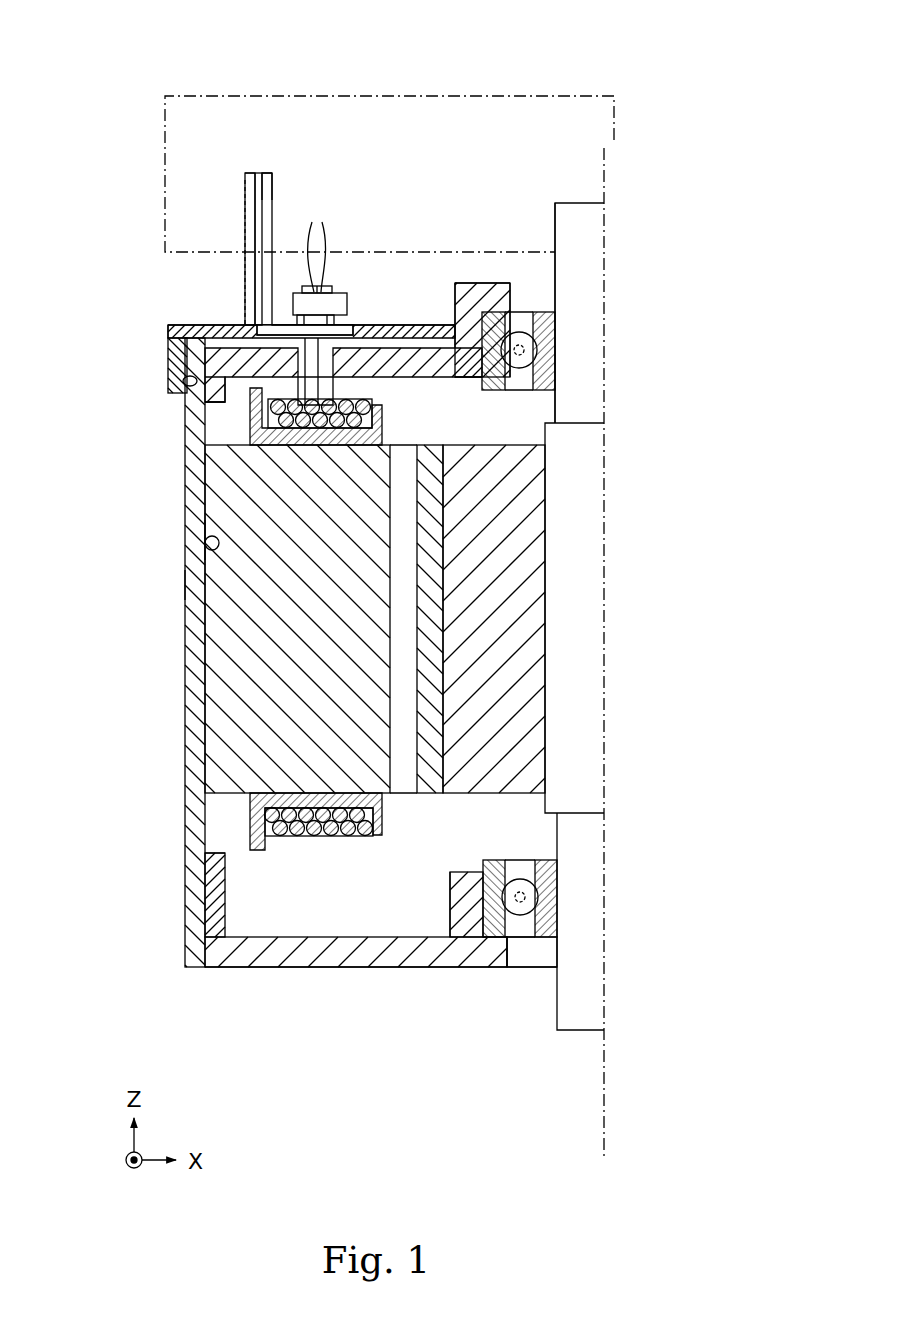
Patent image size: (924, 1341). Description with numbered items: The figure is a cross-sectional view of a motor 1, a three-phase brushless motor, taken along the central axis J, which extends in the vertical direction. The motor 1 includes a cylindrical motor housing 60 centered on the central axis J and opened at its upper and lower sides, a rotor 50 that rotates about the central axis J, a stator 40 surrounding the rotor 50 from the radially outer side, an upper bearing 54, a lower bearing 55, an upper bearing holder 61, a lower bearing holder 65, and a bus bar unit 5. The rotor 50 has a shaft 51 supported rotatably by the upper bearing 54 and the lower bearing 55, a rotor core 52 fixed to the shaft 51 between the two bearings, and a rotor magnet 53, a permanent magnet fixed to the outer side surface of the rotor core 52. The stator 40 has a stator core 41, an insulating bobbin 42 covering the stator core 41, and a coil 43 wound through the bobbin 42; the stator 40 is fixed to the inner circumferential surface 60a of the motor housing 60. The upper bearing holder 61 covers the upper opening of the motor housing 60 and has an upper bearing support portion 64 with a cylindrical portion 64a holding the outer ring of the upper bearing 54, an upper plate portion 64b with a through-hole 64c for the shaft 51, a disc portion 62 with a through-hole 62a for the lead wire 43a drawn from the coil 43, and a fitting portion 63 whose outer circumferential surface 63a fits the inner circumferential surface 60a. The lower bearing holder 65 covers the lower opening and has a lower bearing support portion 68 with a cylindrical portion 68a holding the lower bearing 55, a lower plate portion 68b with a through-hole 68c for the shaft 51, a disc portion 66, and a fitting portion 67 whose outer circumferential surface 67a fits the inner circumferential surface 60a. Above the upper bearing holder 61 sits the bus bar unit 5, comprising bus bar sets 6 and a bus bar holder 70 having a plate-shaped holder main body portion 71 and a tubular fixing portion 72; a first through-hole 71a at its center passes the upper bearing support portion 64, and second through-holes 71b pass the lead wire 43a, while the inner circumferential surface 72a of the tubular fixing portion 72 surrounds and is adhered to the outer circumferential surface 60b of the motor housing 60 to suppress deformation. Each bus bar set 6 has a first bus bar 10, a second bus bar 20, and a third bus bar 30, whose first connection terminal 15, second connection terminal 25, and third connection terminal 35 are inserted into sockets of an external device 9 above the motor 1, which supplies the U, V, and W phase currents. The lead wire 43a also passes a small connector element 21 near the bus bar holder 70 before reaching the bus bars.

The motor 1 is at (54, 105).
The external device 9 is at (350, 96).
The bus bar set 6 is at (238, 175).
The first connection terminal 15 is at (252, 172).
The third connection terminal 35 is at (260, 172).
The second connection terminal 25 is at (268, 172).
The third bus bar 30 is at (246, 206).
The second bus bar 20 is at (274, 192).
The first bus bar 10 is at (244, 262).
The lead wire 43a is at (316, 243).
The connector 21 is at (335, 302).
The second through-hole 71b is at (352, 330).
The bus bar holder 70 is at (207, 325).
The holder main body portion 71 is at (203, 347).
The bus bar unit 5 is at (165, 324).
The tubular fixing portion 72 is at (172, 355).
The disc portion 62 is at (250, 362).
The fitting portion 63 is at (213, 382).
The inner circumferential surface 72a is at (183, 385).
The outer circumferential surface 63a is at (207, 396).
The coil 43 is at (256, 417).
The bobbin 42 is at (282, 440).
The motor housing 60 is at (184, 512).
The inner circumferential surface 60a is at (212, 549).
The outer circumferential surface 60b is at (185, 592).
The stator core 41 is at (222, 638).
The stator 40 is at (204, 682).
The upper bearing holder 61 is at (465, 282).
The upper bearing support portion 64 is at (490, 282).
The cylindrical portion 64a is at (468, 322).
The upper plate portion 64b is at (500, 300).
The through-hole 64c is at (513, 298).
The rotor 50 is at (586, 200).
The central axis J is at (604, 163).
The shaft 51 is at (592, 322).
The upper bearing 54 is at (552, 360).
The through-hole 62a is at (333, 378).
The first through-hole 71a is at (468, 345).
The rotor core 52 is at (527, 598).
The rotor magnet 53 is at (437, 672).
The lower bearing support portion 68 is at (466, 860).
The lower bearing 55 is at (550, 877).
The through-hole 68c is at (512, 948).
The fitting portion 67 is at (213, 890).
The outer circumferential surface 67a is at (203, 935).
The disc portion 66 is at (333, 953).
The cylindrical portion 68a is at (457, 907).
The lower plate portion 68b is at (490, 965).
The lower bearing holder 65 is at (503, 970).